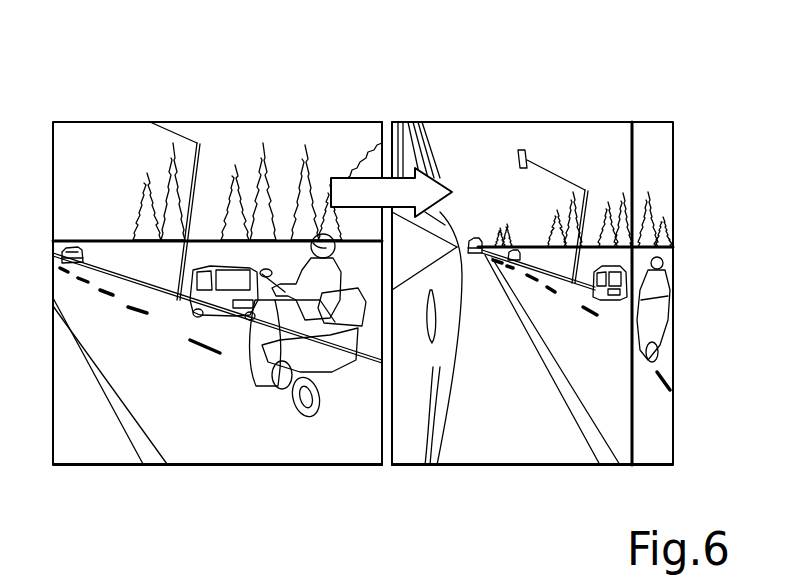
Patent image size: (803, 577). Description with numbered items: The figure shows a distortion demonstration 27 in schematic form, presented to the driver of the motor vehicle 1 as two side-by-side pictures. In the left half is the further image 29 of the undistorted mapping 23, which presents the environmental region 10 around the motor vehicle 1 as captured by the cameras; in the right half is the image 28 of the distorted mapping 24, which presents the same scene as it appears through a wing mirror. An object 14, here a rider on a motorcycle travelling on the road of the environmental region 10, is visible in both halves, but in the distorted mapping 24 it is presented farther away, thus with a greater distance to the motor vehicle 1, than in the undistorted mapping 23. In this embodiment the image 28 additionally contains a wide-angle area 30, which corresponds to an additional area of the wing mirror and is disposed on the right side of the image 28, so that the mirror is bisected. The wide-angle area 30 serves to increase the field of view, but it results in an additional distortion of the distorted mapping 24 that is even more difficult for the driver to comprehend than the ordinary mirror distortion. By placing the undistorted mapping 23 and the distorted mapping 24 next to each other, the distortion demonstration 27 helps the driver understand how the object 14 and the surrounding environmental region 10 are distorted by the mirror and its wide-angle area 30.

The motor vehicle 1 is at (432, 249).
The environmental region 10 is at (154, 417).
The object 14 is at (289, 253).
The undistorted mapping 23 is at (190, 475).
The distorted mapping 24 is at (517, 481).
The distortion demonstration 27 is at (384, 482).
The image 28 is at (586, 481).
The further image 29 is at (265, 477).
The wide-angle area 30 is at (655, 466).